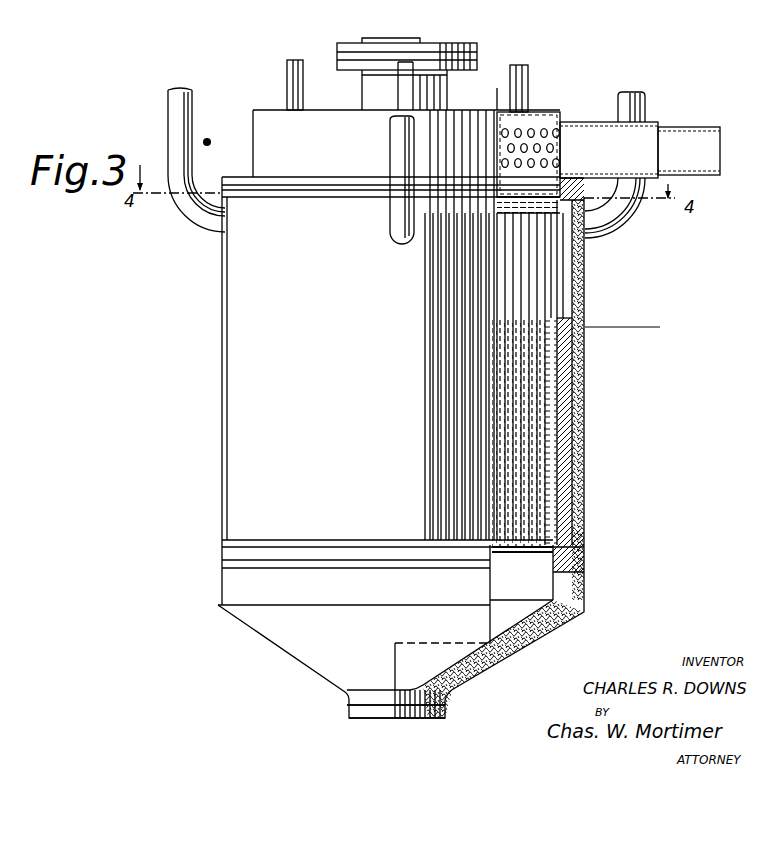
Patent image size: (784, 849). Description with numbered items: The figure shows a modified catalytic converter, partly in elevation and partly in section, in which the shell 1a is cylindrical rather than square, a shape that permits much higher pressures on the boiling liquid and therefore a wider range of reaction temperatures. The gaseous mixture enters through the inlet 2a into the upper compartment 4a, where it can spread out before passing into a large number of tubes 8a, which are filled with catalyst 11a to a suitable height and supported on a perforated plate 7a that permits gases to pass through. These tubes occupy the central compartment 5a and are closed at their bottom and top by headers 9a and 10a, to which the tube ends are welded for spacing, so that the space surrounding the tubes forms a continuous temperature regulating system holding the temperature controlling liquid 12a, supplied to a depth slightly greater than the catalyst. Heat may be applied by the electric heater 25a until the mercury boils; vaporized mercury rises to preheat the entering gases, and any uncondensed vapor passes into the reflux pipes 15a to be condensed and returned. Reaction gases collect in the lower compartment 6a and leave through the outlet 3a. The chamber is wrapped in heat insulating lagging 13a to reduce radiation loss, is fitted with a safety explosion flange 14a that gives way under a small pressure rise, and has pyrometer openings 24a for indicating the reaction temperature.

The shell 1a is at (567, 297).
The inlet 2a is at (640, 135).
The outlet 3a is at (405, 713).
The upper compartment 4a is at (548, 127).
The central compartment 5a is at (548, 270).
The lower compartment 6a is at (498, 613).
The perforated plate 7a is at (507, 550).
The tubes 8a is at (548, 422).
The header 9a is at (575, 527).
The header 10a is at (557, 202).
The catalyst 11a is at (553, 448).
The temperature controlling liquid 12a is at (553, 314).
The heat insulating lagging 13a is at (568, 375).
The safety explosion flange 14a is at (462, 45).
The reflux pipes 15a is at (175, 113).
The pyrometer openings 24a is at (293, 78).
The electric heater 25a is at (563, 352).